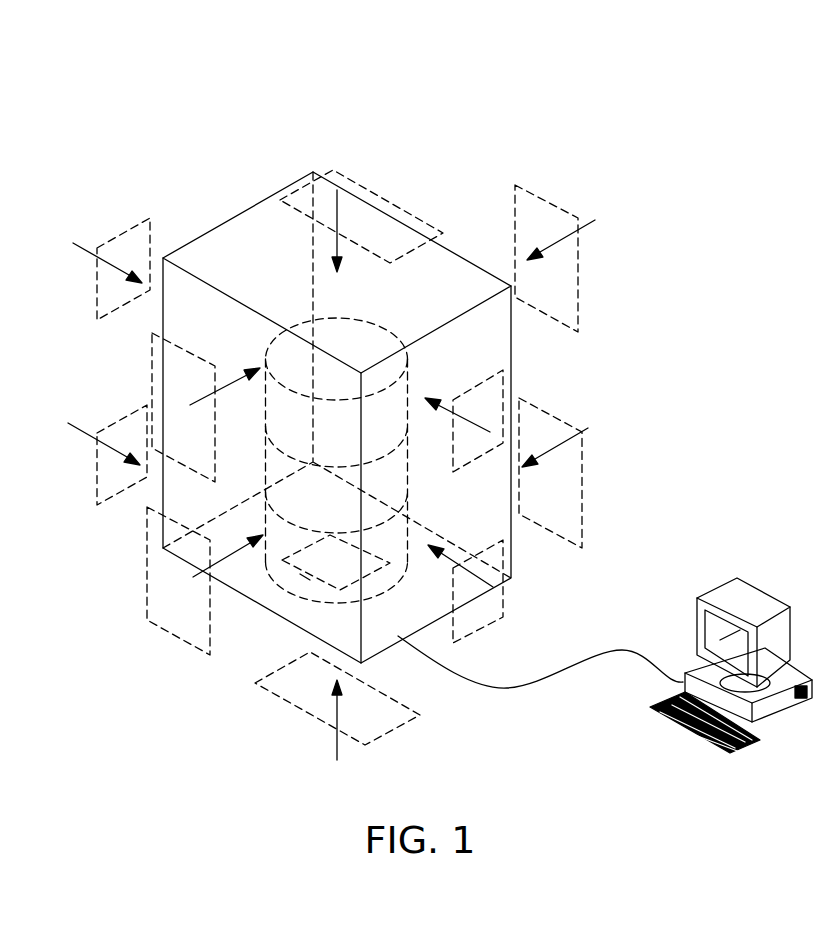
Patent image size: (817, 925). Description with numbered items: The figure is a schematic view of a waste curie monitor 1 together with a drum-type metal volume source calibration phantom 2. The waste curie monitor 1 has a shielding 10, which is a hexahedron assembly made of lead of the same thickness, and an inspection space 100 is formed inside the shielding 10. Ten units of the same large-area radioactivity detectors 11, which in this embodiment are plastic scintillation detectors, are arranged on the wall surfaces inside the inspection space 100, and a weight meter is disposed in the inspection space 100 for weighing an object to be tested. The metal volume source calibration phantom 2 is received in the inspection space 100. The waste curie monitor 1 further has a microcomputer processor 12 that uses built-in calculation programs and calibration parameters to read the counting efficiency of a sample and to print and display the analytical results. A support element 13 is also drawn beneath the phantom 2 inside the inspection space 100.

The waste curie monitor 1 is at (195, 122).
The shielding 10 is at (463, 268).
The inspection space 100 is at (454, 517).
The metal volume source calibration phantom 2 is at (291, 315).
The radioactivity detector 11 is at (120, 232).
The microcomputer processor 12 is at (745, 598).
The support base 13 is at (280, 598).